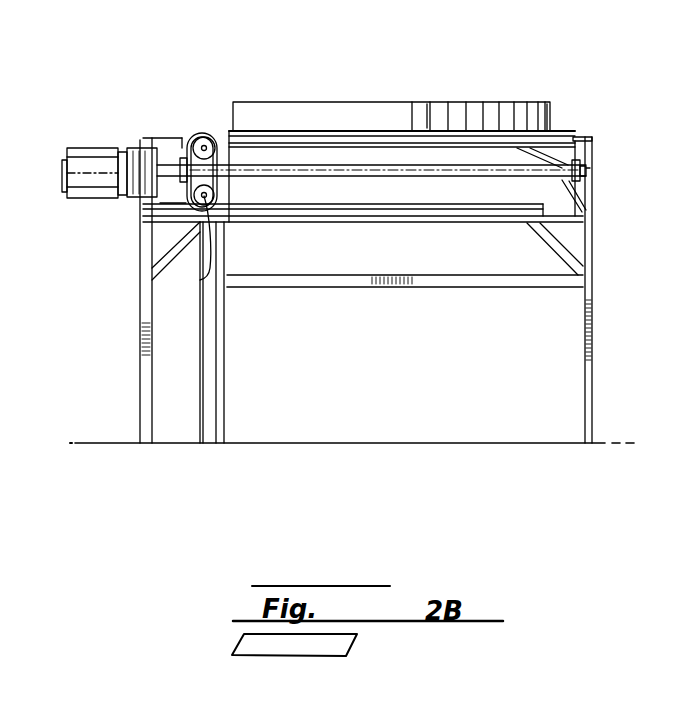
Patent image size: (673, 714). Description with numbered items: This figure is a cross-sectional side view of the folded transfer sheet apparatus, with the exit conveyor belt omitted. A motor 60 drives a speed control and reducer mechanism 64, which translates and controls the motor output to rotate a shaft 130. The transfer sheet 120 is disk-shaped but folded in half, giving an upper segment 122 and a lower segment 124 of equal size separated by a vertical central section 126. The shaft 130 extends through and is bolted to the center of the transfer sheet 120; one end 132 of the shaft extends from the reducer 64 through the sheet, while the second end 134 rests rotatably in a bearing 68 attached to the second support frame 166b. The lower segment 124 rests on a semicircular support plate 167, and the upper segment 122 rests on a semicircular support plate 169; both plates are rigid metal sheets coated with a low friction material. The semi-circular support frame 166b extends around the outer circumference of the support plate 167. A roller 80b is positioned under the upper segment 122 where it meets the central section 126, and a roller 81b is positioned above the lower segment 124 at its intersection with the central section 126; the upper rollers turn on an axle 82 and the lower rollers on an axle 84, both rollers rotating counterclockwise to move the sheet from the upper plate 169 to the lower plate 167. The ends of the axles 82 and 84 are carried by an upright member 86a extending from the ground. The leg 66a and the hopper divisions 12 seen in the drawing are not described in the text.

The motor 60 is at (62, 171).
The speed control and reducer mechanism 64 is at (128, 157).
The second support frame 166b is at (181, 135).
The leg 66a is at (142, 373).
The transfer sheet 120 is at (280, 131).
The containers 12 is at (483, 113).
The upper segment 122 is at (426, 122).
The lower segment 124 is at (311, 203).
The shaft 130 is at (352, 174).
The support plate 167 is at (328, 224).
The second end 134 is at (572, 148).
The support plate 169 is at (584, 135).
The bearing 68 is at (583, 171).
The roller 80b is at (207, 132).
The axle 82 is at (241, 131).
The roller 81b is at (218, 190).
The end of the shaft 132 is at (170, 152).
The central section 126 is at (183, 200).
The axle 84 is at (203, 271).
The member 86a is at (207, 317).